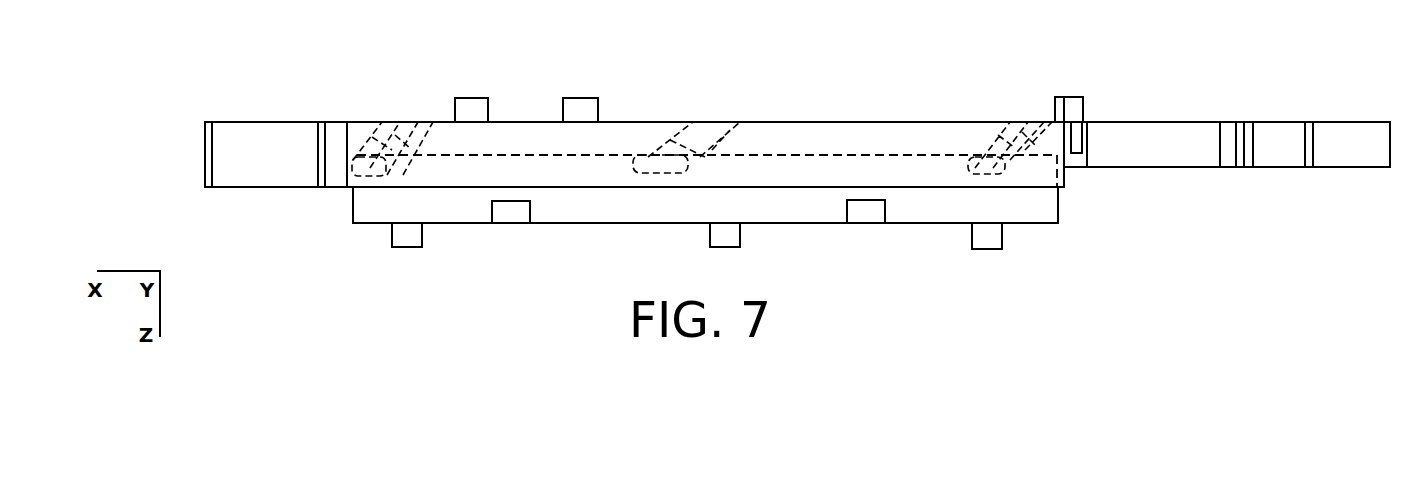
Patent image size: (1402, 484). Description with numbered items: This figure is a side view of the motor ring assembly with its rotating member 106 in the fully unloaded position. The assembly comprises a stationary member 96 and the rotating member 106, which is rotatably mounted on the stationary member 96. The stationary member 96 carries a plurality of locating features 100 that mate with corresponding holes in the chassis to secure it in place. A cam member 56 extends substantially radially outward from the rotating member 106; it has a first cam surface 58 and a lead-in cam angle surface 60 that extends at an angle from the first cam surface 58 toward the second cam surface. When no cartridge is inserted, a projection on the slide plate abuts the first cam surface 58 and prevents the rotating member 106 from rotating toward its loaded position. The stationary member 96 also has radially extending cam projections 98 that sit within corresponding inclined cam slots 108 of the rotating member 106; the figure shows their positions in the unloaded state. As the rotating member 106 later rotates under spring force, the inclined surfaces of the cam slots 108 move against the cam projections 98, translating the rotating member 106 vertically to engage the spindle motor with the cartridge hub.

The cam member 56 is at (1193, 169).
The first cam surface 58 is at (1365, 144).
The lead-in cam angle surface 60 is at (1278, 140).
The stationary member 96 is at (938, 225).
The cam projections 98 is at (361, 170).
The locating features 100 is at (408, 248).
The rotating member 106 is at (207, 153).
The inclined cam slots 108 is at (399, 140).